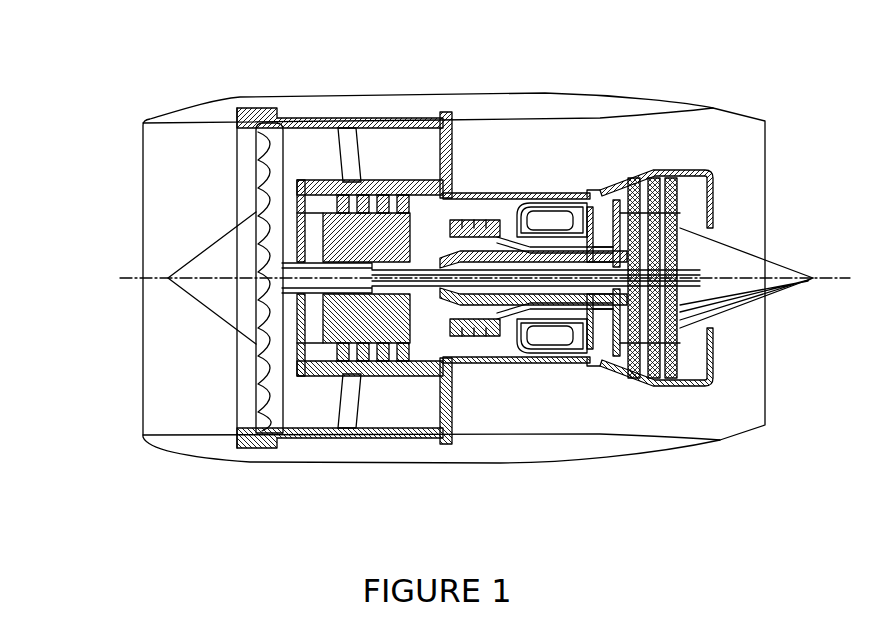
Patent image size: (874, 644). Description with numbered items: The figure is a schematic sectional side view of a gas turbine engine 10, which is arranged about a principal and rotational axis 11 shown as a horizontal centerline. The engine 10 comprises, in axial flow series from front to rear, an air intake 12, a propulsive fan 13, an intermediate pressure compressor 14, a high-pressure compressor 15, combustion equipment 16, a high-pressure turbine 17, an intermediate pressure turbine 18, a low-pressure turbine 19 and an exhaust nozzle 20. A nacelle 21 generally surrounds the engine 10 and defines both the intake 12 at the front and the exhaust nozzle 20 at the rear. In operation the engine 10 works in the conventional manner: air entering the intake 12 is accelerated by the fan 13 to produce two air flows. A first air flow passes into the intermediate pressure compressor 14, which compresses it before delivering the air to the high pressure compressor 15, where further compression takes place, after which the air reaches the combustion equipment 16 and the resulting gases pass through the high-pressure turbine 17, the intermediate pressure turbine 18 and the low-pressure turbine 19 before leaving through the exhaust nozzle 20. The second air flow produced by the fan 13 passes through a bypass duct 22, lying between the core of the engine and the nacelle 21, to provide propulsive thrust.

The gas turbine engine 10 is at (128, 163).
The principal and rotational axis 11 is at (142, 278).
The air intake 12 is at (208, 121).
The propulsive fan 13 is at (270, 406).
The intermediate pressure compressor 14 is at (372, 350).
The high-pressure compressor 15 is at (474, 222).
The combustion equipment 16 is at (547, 338).
The high-pressure turbine 17 is at (583, 340).
The intermediate pressure turbine 18 is at (620, 200).
The low-pressure turbine 19 is at (637, 357).
The exhaust nozzle 20 is at (772, 422).
The nacelle 21 is at (587, 92).
The bypass duct 22 is at (434, 167).